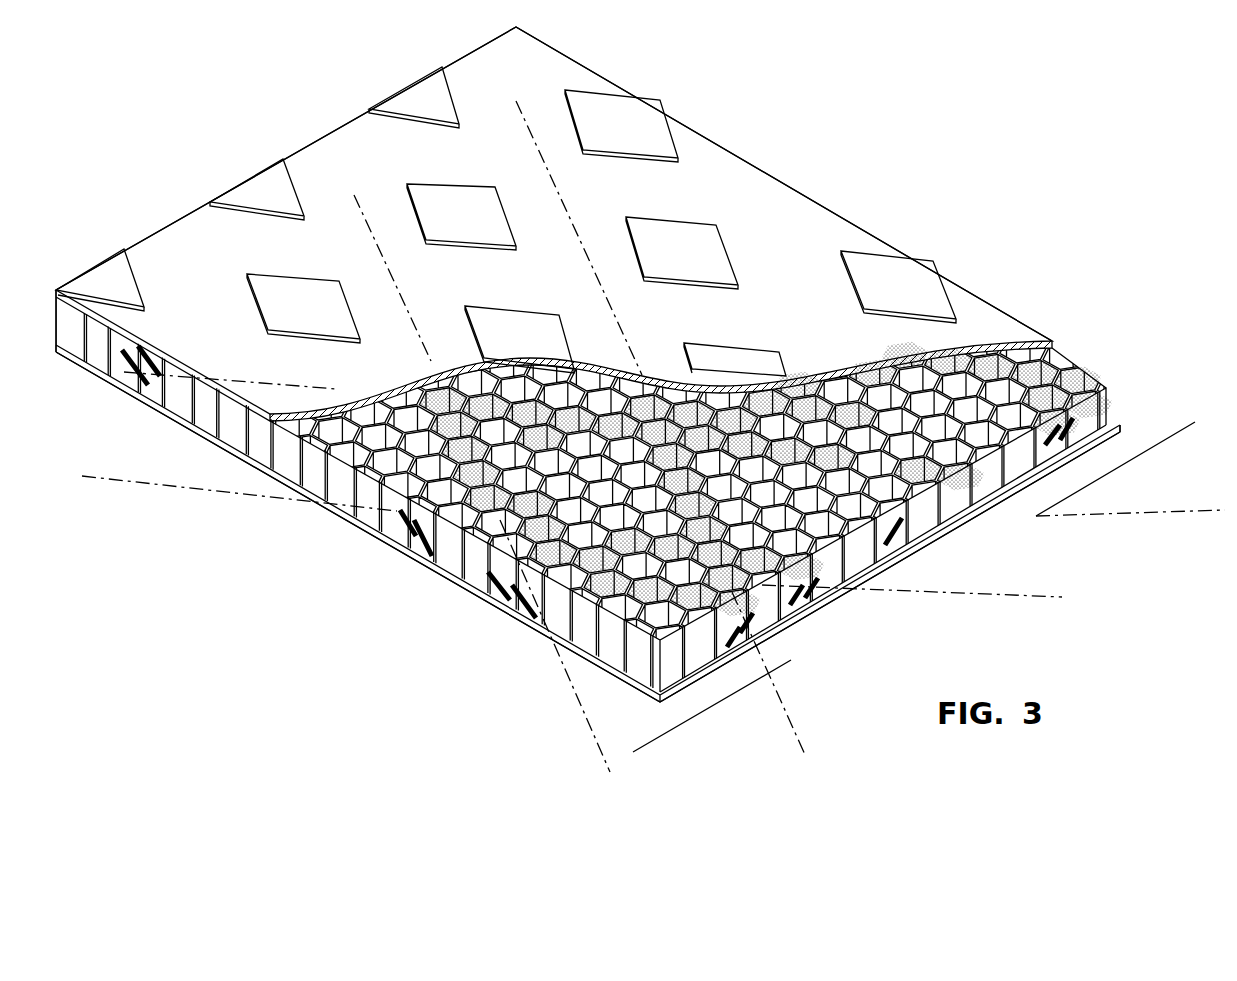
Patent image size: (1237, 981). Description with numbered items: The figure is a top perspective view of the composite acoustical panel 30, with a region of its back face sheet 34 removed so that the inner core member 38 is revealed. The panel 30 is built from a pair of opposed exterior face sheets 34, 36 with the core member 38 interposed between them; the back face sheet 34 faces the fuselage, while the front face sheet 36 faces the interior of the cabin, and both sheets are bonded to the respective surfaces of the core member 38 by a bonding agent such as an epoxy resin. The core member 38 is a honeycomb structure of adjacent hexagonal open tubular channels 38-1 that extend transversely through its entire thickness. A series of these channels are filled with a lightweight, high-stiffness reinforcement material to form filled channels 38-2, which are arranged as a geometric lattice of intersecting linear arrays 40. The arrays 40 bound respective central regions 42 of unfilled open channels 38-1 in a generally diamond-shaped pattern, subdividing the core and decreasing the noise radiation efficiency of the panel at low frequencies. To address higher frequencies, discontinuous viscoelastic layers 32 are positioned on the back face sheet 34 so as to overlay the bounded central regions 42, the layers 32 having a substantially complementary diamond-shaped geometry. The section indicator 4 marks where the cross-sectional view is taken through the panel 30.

The composite acoustical panel 30 is at (872, 197).
The discontinuous viscoelastic layers 32 is at (417, 106).
The back face sheet 34 is at (211, 265).
The front face sheet 36 is at (394, 545).
The core member 38 is at (499, 583).
The open channels 38-1 is at (420, 440).
The filled channels 38-2 is at (744, 598).
The intersecting linear arrays 40 is at (805, 746).
The central regions 42 is at (596, 493).
The section 4-4 indicator 4 is at (1124, 398).